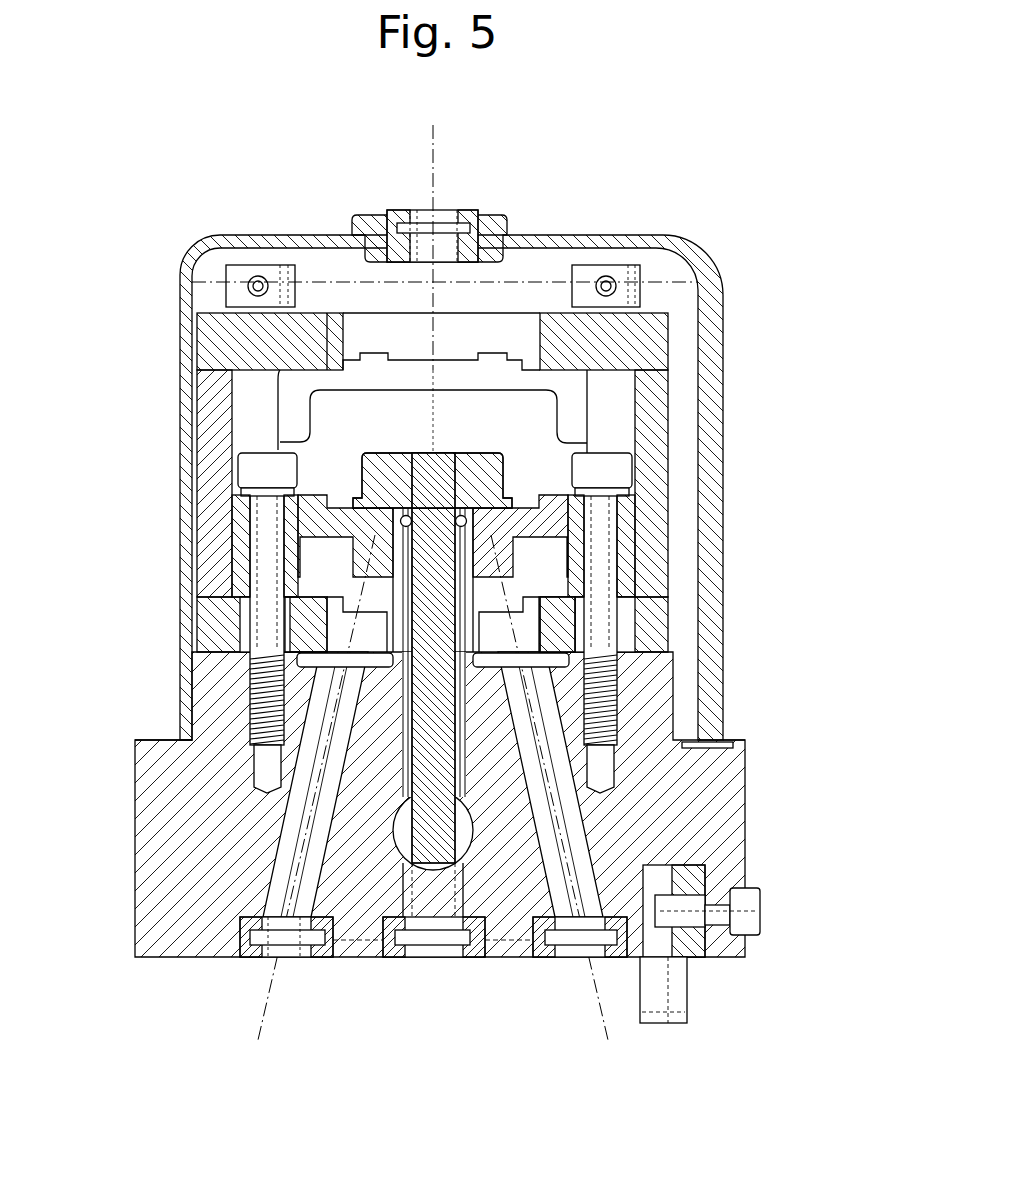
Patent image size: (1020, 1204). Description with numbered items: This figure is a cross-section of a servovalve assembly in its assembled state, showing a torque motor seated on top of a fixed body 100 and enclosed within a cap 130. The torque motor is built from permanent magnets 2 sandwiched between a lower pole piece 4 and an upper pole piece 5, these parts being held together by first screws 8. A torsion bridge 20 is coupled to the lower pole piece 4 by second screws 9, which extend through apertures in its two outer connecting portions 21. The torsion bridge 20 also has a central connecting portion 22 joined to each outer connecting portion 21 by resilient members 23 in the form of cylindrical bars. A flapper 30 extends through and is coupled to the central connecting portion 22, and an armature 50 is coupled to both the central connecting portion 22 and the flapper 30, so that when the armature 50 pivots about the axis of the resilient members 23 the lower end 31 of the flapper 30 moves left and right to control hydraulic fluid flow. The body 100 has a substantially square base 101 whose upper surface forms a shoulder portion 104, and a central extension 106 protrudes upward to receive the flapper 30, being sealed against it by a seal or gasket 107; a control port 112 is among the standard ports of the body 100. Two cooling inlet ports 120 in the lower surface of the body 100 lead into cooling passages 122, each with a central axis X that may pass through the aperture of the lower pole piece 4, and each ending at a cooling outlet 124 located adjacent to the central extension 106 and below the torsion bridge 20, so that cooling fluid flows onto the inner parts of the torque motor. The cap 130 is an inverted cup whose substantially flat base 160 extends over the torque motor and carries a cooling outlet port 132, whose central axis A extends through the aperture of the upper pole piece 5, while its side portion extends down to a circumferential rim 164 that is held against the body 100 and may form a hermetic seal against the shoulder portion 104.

The permanent magnets 2 is at (214, 436).
The lower pole piece 4 is at (217, 625).
The upper pole piece 5 is at (238, 345).
The first screws 8 is at (240, 273).
The second screws 9 is at (265, 549).
The torsion bridge 20 is at (345, 547).
The outer connecting portions 21 is at (243, 526).
The central connecting portion 22 is at (377, 525).
The resilient members 23 is at (322, 522).
The flapper 30 is at (433, 766).
The lower end 31 is at (435, 848).
The armature 50 is at (480, 468).
The body 100 is at (710, 833).
The base 101 is at (200, 827).
The shoulder portion 104 is at (738, 740).
The central extension 106 is at (470, 613).
The seal or gasket 107 is at (462, 525).
The control port 112 is at (413, 957).
The cooling inlet ports 120 is at (265, 957).
The cooling passages 122 is at (287, 893).
The cooling outlet 124 is at (333, 670).
The cap 130 is at (700, 250).
The cooling outlet port 132 is at (455, 210).
The base 160 is at (584, 237).
The circumferential rim 164 is at (183, 744).
The central axis of the cooling outlet port A is at (433, 140).
The central axis of cooling passage X is at (268, 990).